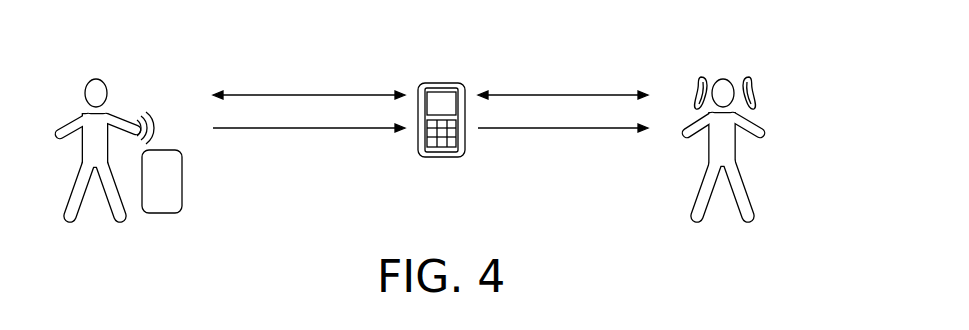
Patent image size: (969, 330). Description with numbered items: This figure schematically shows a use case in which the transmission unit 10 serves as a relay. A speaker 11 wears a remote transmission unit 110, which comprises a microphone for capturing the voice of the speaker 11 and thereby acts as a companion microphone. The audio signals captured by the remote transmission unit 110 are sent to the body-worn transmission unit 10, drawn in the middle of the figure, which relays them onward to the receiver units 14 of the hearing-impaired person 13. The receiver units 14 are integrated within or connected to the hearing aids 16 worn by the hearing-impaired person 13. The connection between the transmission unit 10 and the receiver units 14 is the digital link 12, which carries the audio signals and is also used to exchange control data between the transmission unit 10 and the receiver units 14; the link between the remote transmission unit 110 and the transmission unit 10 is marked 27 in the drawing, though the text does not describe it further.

The transmission unit 10 is at (438, 80).
The speaker 11 is at (94, 79).
The digital link 12 is at (557, 160).
The hearing-impaired person 13 is at (723, 79).
The receiver unit 14 is at (750, 105).
The hearing aid 16 is at (700, 77).
The digital audio link from remote device 27 is at (305, 162).
The remote transmission unit 110 is at (172, 190).